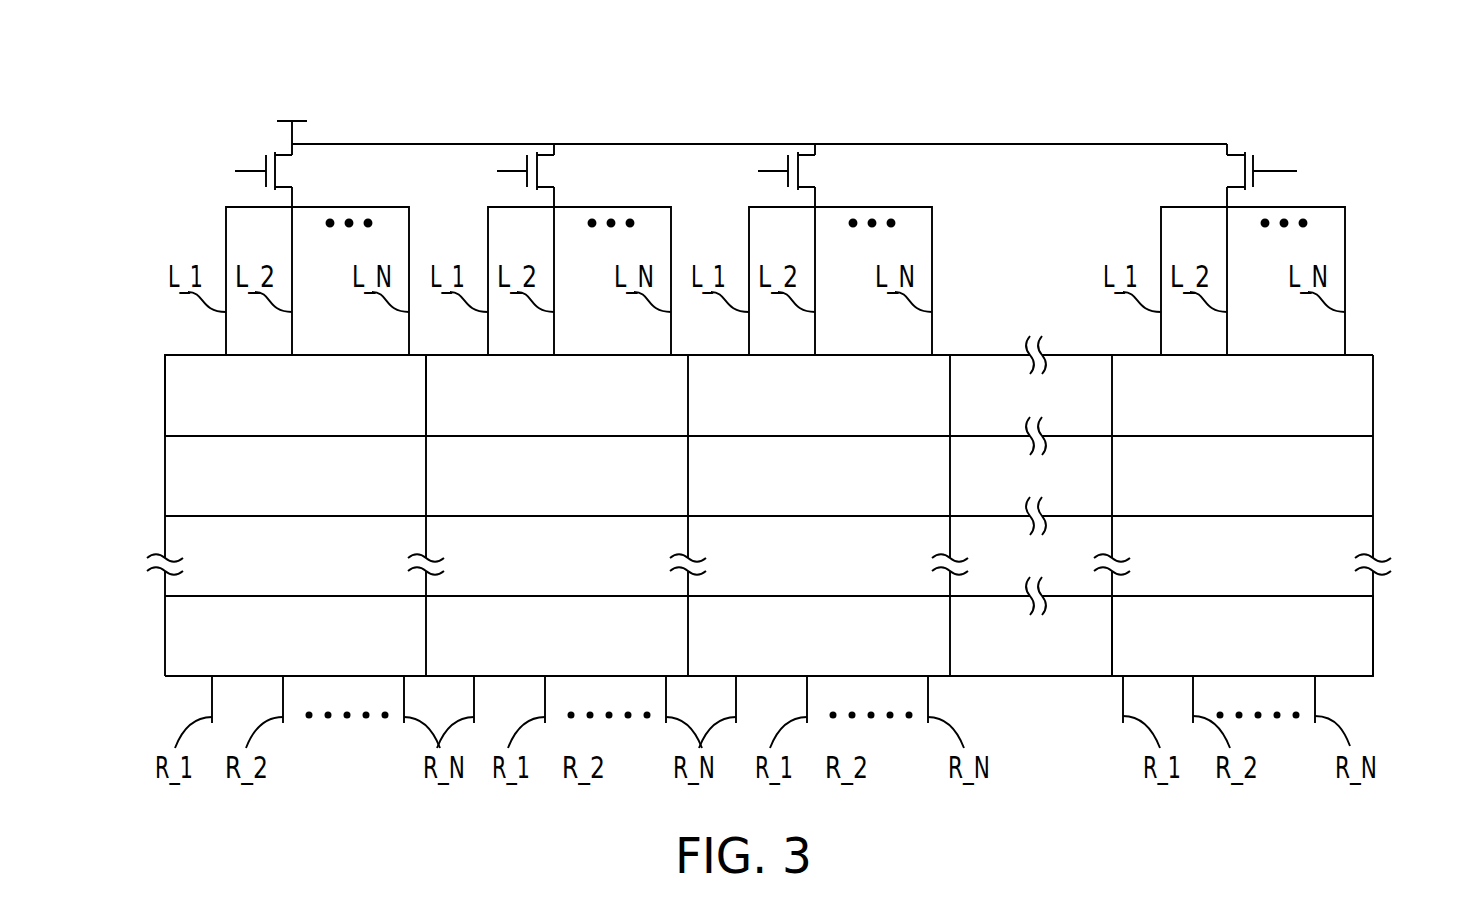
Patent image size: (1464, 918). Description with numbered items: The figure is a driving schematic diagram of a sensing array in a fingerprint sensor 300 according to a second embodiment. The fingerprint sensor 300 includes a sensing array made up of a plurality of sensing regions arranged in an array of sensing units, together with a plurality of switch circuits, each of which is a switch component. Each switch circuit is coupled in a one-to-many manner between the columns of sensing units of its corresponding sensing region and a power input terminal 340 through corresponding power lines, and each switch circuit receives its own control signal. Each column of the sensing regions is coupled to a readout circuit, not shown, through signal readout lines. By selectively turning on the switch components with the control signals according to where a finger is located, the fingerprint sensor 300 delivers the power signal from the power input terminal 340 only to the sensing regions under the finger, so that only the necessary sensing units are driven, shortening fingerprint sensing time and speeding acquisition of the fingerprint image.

The fingerprint sensor 300 is at (1445, 809).
The power input terminal 340 is at (290, 118).